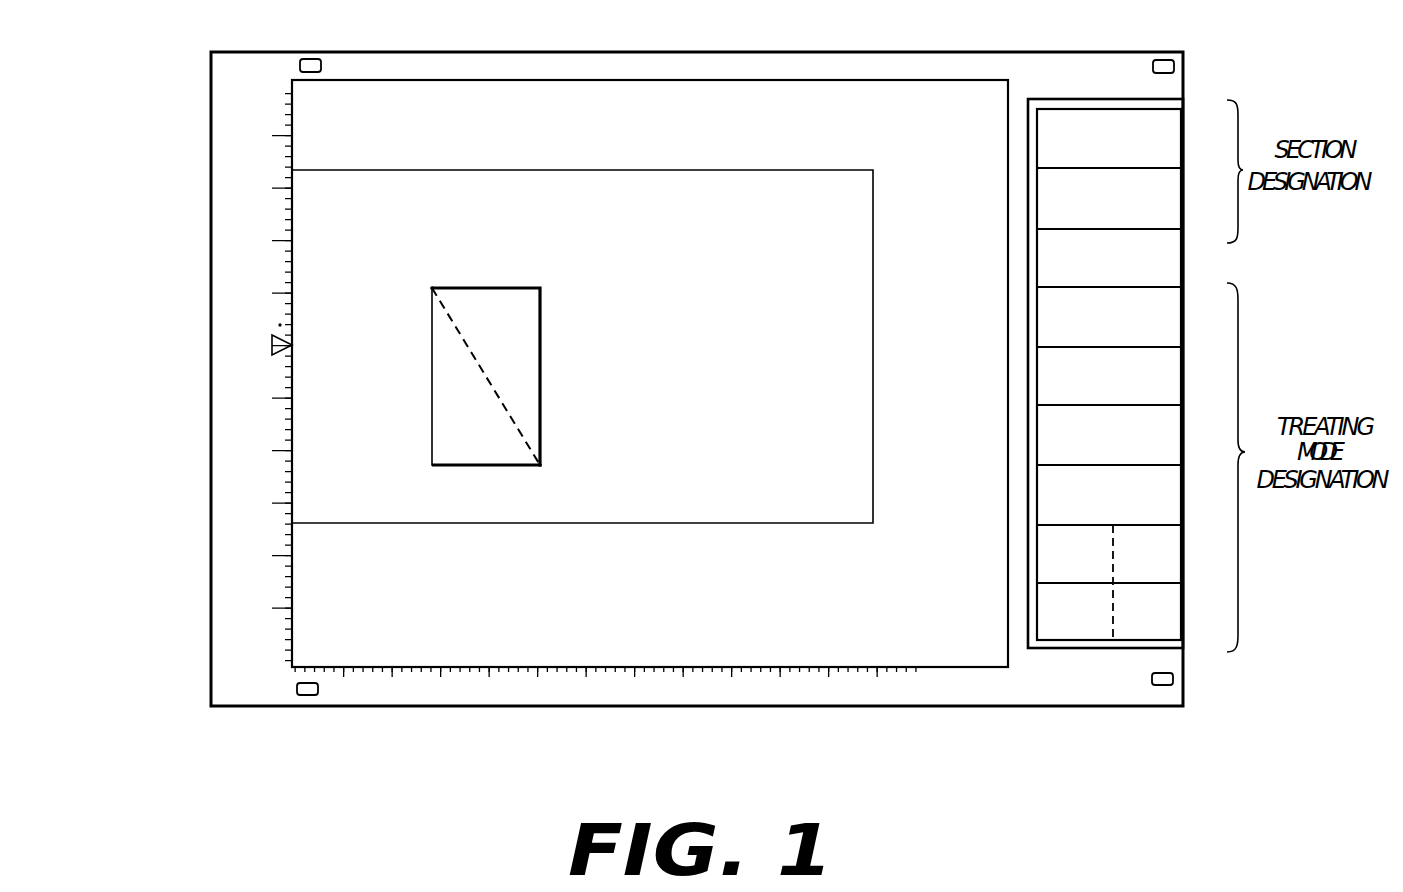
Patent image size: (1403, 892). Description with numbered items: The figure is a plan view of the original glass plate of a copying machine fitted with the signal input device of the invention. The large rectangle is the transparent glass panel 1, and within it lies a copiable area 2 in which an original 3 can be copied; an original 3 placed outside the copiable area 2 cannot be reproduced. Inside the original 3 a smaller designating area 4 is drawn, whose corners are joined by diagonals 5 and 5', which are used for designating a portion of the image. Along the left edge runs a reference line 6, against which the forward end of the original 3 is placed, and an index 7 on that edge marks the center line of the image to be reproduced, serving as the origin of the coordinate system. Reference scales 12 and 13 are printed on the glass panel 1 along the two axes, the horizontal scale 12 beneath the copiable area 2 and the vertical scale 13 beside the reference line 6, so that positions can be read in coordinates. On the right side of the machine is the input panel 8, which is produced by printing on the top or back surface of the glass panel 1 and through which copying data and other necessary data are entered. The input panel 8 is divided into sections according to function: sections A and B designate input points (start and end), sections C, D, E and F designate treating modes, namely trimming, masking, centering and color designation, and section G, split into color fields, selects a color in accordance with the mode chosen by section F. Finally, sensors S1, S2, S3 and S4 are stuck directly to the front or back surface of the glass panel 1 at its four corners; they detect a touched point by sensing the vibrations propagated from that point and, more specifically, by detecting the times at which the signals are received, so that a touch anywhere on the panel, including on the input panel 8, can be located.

The transparent glass panel 1 is at (553, 63).
The copiable area 2 is at (963, 650).
The original 3 is at (655, 170).
The designating area 4 is at (476, 467).
The diagonal 5 is at (571, 470).
The diagonal 5' is at (451, 268).
The reference line 6 is at (290, 107).
The index 7 is at (268, 345).
The input panel 8 is at (1126, 422).
The reference scale 12 is at (617, 693).
The reference scale 13 is at (275, 325).
The sensor S1 is at (310, 695).
The sensor S2 is at (1160, 685).
The sensor S3 is at (1158, 60).
The sensor S4 is at (308, 58).
The section A is at (1186, 124).
The section B is at (1186, 185).
The section C is at (1186, 302).
The section D is at (1186, 362).
The section E is at (1186, 420).
The section F is at (1186, 480).
The section G is at (1167, 583).